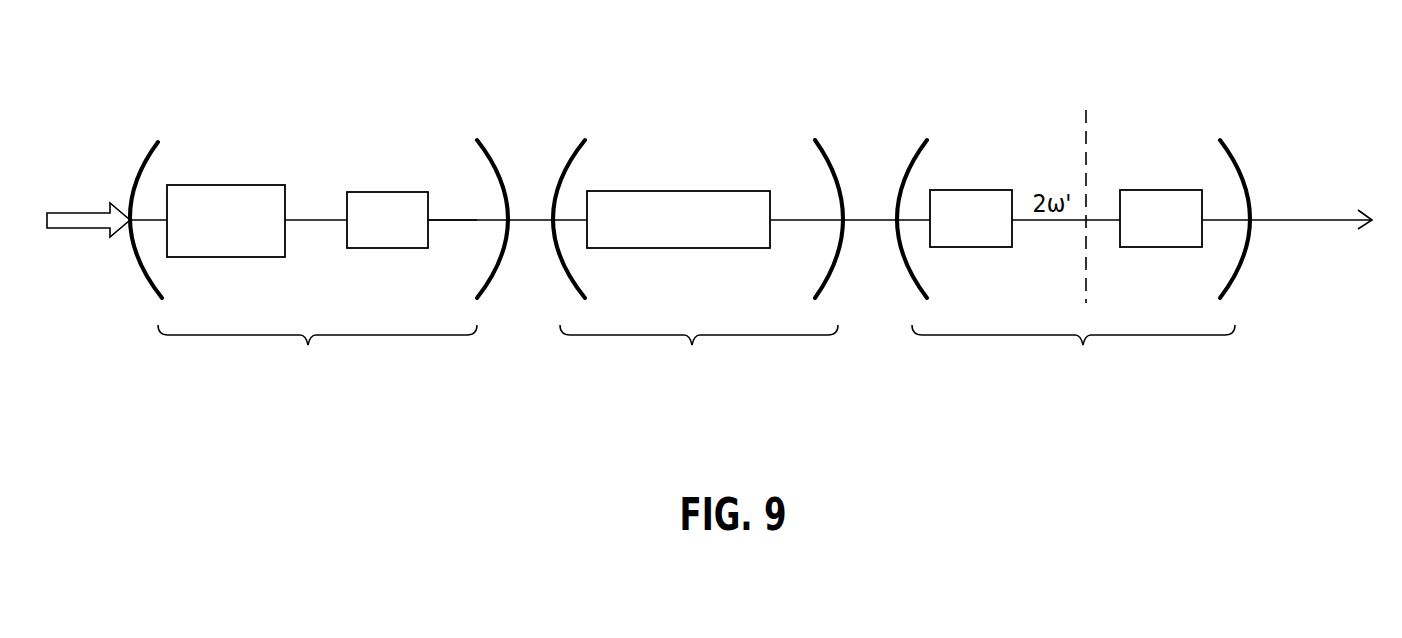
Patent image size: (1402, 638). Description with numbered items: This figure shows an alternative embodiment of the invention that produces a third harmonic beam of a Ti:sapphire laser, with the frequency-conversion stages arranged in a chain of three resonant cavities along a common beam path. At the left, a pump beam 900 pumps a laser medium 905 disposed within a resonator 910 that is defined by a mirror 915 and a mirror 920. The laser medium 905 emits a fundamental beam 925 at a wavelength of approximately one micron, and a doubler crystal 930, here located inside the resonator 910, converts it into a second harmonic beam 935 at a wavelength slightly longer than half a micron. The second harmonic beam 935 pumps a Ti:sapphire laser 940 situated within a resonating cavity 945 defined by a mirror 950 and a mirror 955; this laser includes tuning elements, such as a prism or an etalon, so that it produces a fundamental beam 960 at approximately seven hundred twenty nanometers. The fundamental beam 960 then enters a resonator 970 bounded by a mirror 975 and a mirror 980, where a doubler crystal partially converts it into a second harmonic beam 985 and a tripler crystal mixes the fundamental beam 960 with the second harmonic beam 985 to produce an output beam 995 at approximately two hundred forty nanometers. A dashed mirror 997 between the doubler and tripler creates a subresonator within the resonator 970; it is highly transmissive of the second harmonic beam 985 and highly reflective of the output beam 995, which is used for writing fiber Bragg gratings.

The pump beam 900 is at (78, 230).
The laser medium 905 is at (223, 183).
The resonator 910 is at (352, 337).
The mirror 915 is at (158, 142).
The mirror 920 is at (487, 148).
The fundamental beam 925 is at (332, 223).
The doubler crystal 930 is at (365, 192).
The second harmonic beam 935 is at (465, 222).
The Ti:sapphire laser 940 is at (643, 192).
The resonating cavity 945 is at (737, 335).
The mirror 950 is at (573, 145).
The mirror 955 is at (815, 150).
The fundamental beam 960 is at (800, 220).
The resonator 970 is at (971, 218).
The mirror 975 is at (922, 145).
The mirror 980 is at (1238, 162).
The second harmonic beam 985 is at (1161, 218).
The output beam 995 is at (1323, 222).
The mirror 997 is at (1083, 277).